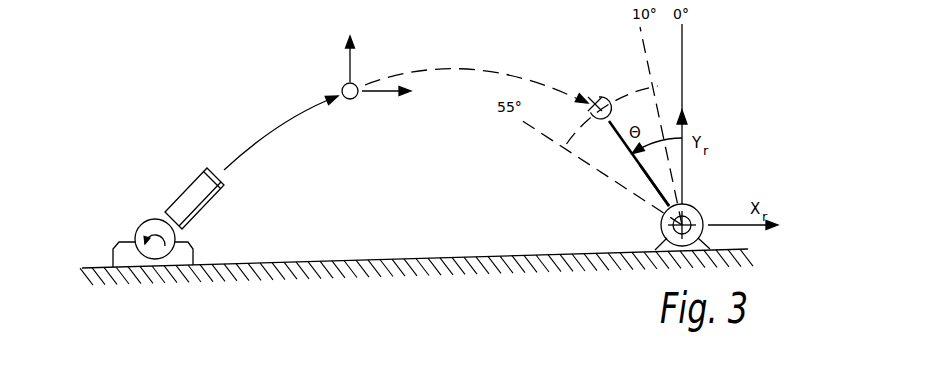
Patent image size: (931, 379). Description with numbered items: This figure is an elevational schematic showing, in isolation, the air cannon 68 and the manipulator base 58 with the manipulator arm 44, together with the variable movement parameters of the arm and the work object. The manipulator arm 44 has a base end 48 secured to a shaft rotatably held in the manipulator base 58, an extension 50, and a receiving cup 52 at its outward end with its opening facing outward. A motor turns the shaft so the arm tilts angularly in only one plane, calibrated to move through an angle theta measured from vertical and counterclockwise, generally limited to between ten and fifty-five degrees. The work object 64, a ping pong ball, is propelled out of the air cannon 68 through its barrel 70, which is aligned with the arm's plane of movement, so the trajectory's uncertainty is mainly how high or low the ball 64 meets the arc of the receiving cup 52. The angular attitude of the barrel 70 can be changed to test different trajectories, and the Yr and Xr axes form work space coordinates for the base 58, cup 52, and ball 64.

The manipulator arm 44 is at (652, 167).
The base end 48 is at (661, 228).
The extension 50 is at (664, 197).
The receiving cup 52 is at (621, 94).
The manipulator base 58 is at (657, 243).
The work object 64 is at (352, 99).
The air cannon 68 is at (158, 214).
The barrel 70 is at (192, 184).